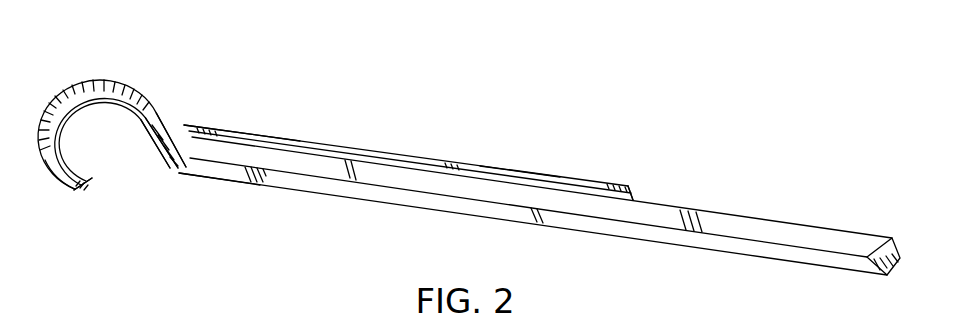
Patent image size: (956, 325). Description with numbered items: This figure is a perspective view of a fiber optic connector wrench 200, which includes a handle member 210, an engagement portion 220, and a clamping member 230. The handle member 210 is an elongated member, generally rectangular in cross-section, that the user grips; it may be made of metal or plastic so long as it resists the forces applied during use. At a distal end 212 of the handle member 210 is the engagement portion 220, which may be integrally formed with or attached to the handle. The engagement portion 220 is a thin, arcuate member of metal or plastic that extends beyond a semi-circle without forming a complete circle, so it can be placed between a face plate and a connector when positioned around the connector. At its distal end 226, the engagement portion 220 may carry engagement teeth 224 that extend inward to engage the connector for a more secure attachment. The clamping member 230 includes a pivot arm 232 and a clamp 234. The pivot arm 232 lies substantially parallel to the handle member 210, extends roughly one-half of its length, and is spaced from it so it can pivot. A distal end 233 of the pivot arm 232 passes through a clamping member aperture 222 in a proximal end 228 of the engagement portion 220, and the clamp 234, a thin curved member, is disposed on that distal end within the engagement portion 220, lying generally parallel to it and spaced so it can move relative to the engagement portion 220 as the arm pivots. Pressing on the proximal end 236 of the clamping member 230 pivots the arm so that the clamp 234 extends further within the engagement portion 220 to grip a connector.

The fiber optic connector wrench 200 is at (654, 103).
The handle member 210 is at (808, 228).
The distal end of handle member 212 is at (193, 175).
The engagement portion 220 is at (95, 80).
The clamping member aperture 222 is at (182, 109).
The engagement teeth 224 is at (93, 182).
The distal end of engagement portion 226 is at (58, 187).
The proximal end of engagement portion 228 is at (181, 127).
The clamping member 230 is at (391, 148).
The pivot arm 232 is at (522, 172).
The distal end of pivot arm 233 is at (165, 118).
The clamp 234 is at (166, 146).
The proximal end of clamping member 236 is at (632, 197).